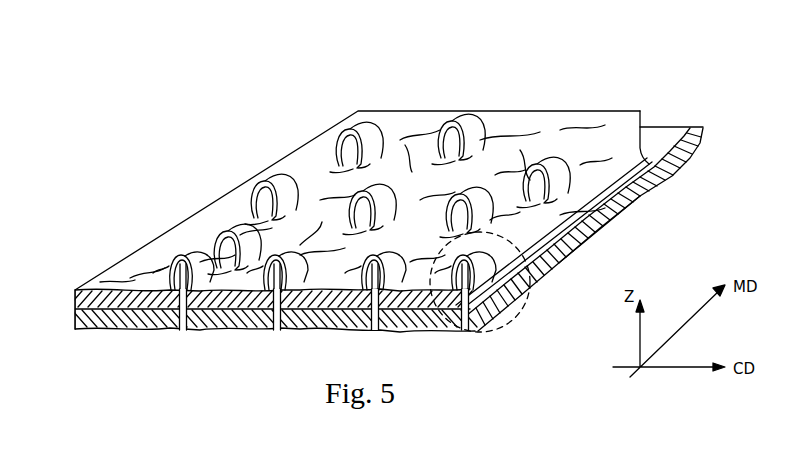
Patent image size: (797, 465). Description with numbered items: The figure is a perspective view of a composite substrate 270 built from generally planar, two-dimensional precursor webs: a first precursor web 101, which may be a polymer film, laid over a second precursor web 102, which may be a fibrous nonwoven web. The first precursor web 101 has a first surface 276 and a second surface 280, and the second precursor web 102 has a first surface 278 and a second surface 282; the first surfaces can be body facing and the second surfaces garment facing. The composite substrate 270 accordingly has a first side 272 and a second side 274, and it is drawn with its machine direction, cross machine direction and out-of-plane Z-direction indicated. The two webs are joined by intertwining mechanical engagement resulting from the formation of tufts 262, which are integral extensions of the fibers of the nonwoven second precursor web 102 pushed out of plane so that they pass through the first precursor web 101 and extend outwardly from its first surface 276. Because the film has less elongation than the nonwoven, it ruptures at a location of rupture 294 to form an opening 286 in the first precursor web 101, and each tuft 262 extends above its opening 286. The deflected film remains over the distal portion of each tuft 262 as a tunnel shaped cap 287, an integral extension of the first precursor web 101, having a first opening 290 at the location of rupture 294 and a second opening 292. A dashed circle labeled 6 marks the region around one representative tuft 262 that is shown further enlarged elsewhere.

The composite substrate 270 is at (345, 83).
The first side 272 is at (630, 142).
The second side 274 is at (671, 185).
The first surface 276 is at (243, 203).
The first surface 278 is at (662, 135).
The second surface 280 is at (77, 331).
The second surface 282 is at (423, 335).
The opening 286 is at (183, 332).
The cap 287 is at (198, 237).
The first opening 290 is at (263, 195).
The second opening 292 is at (316, 183).
The location of rupture 294 is at (280, 233).
The tuft 262 is at (183, 263).
The first precursor web 101 is at (132, 283).
The second precursor web 102 is at (125, 330).
The detail region of FIG. 6 is at (515, 335).